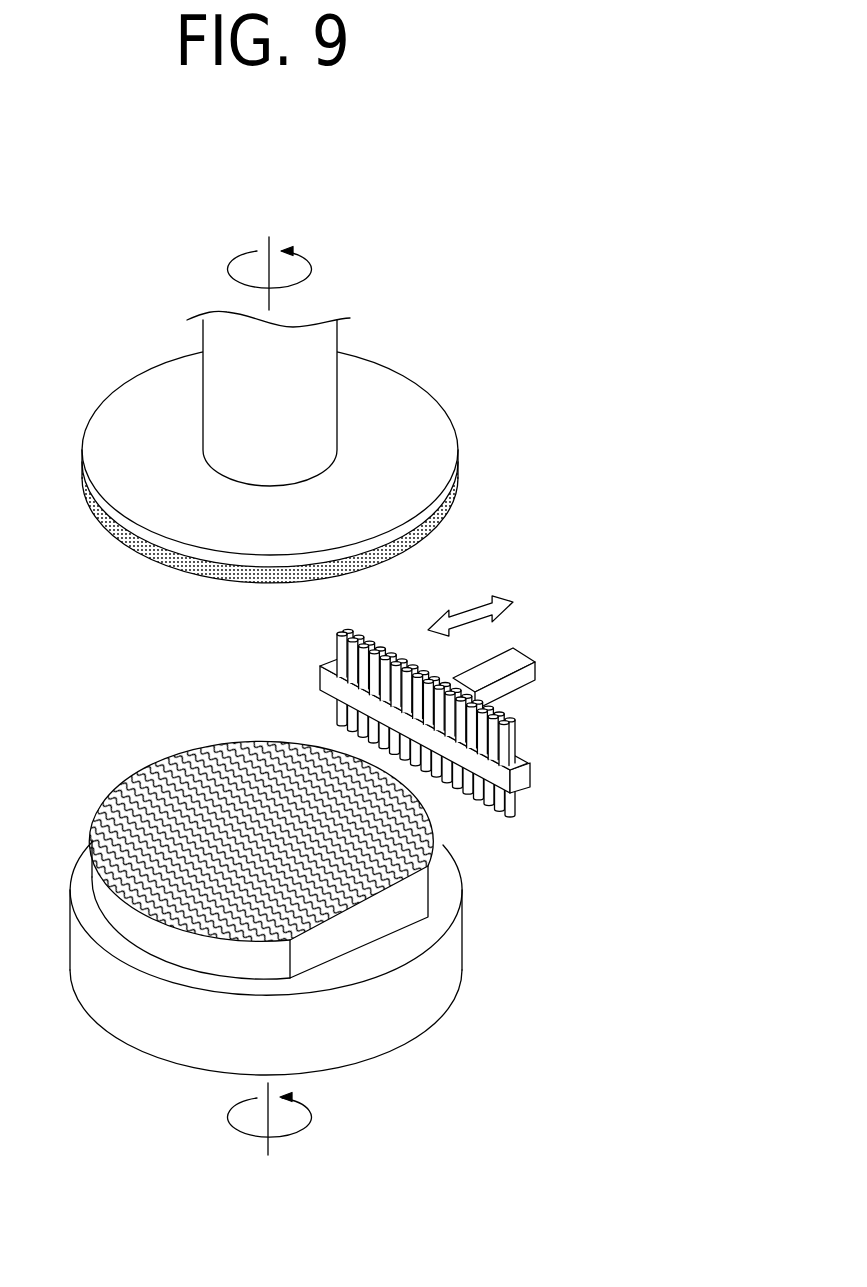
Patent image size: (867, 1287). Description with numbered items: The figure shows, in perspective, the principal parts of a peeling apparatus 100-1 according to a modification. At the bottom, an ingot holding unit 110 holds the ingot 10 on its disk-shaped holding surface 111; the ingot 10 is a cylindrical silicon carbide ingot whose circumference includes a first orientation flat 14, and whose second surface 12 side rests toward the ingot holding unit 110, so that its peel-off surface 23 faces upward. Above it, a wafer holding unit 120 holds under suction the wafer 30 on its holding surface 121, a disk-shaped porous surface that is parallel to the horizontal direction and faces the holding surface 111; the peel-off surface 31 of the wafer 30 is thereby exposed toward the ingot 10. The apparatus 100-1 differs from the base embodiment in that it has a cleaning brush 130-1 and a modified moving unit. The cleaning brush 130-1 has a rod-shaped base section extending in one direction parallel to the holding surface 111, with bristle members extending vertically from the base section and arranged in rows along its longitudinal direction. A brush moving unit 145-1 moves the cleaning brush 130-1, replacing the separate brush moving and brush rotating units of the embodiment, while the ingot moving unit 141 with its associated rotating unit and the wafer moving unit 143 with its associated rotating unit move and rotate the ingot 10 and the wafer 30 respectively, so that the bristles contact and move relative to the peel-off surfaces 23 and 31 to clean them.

The peeling apparatus 100-1 is at (318, 443).
The wafer holding unit 120 is at (262, 466).
The holding surface 121 is at (102, 518).
The wafer 30 is at (270, 557).
The peel-off surface 31 is at (167, 562).
The wafer moving unit 143 is at (315, 378).
The ingot 10 is at (289, 901).
The peel-off surface 23 is at (170, 778).
The first orientation flat 14 is at (306, 977).
The second surface 12 is at (222, 980).
The ingot holding unit 110 is at (304, 958).
The holding surface 111 is at (432, 924).
The ingot moving unit 141 is at (317, 1073).
The cleaning brush 130-1 is at (500, 701).
The brush moving unit 145-1 is at (517, 665).